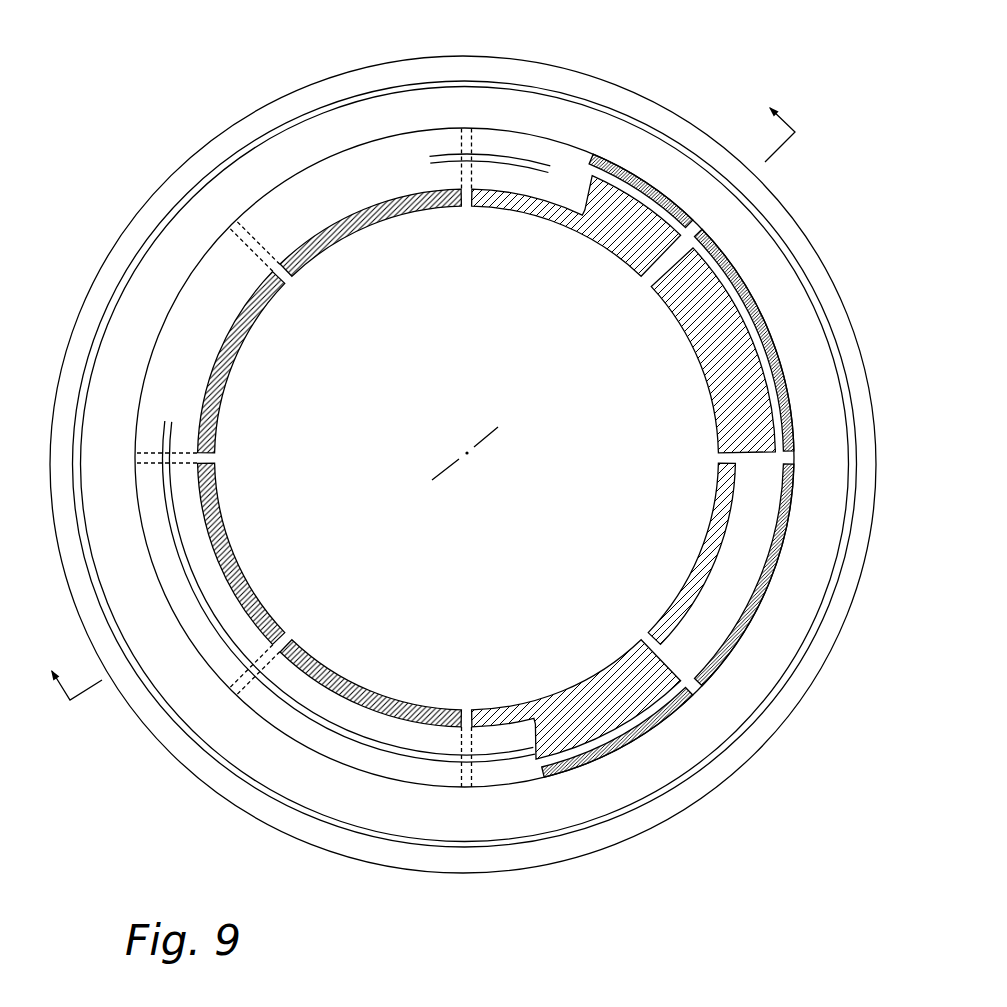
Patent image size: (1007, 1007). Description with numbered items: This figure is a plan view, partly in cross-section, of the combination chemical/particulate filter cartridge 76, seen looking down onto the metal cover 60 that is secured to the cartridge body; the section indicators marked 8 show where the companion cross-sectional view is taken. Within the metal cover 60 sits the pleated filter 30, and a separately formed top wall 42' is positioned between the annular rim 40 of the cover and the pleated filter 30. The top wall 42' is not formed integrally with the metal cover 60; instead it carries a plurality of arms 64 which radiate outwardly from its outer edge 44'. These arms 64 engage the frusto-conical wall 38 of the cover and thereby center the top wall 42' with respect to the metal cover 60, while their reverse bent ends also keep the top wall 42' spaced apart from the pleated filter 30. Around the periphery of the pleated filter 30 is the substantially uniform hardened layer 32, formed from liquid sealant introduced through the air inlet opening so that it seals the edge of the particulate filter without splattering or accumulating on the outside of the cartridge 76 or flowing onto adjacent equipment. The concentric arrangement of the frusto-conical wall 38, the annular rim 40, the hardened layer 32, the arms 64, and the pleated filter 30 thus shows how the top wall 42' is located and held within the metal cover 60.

The combination chemical/particulate filter cartridge 76 is at (660, 89).
The frusto-conical wall 38 is at (411, 140).
The metal cover 60 is at (208, 232).
The section line 8- 8 is at (414, 391).
The hardened layer 32 is at (727, 632).
The pleated filter 30 is at (718, 540).
The outer edge 44' is at (695, 350).
The annular rim 40 is at (540, 183).
The top wall 42' is at (454, 417).
The arms 64 is at (720, 442).